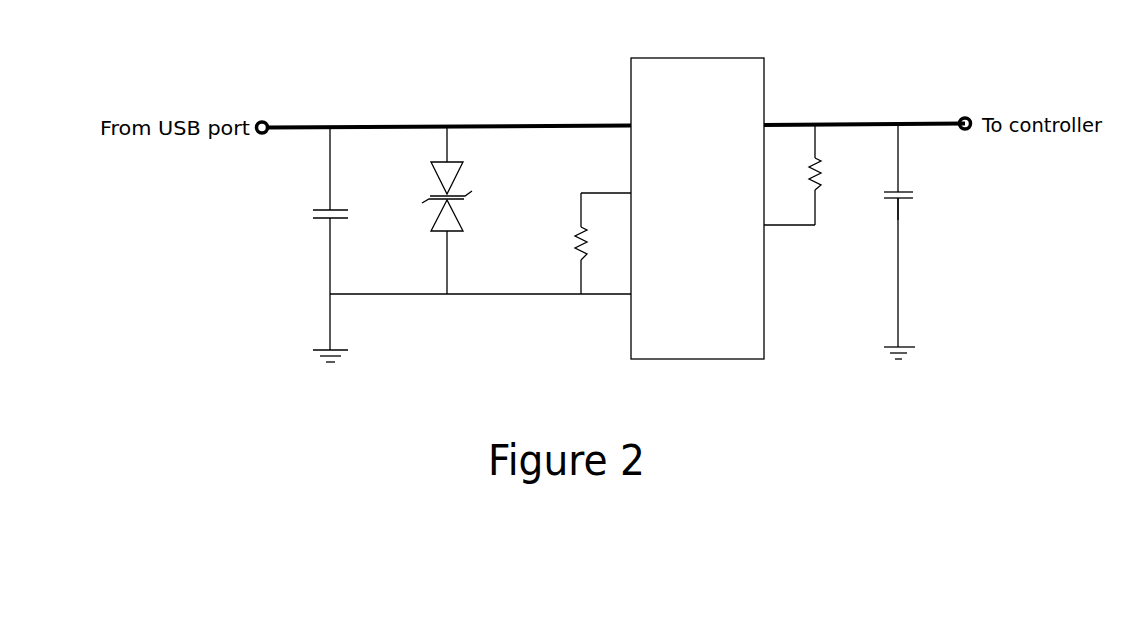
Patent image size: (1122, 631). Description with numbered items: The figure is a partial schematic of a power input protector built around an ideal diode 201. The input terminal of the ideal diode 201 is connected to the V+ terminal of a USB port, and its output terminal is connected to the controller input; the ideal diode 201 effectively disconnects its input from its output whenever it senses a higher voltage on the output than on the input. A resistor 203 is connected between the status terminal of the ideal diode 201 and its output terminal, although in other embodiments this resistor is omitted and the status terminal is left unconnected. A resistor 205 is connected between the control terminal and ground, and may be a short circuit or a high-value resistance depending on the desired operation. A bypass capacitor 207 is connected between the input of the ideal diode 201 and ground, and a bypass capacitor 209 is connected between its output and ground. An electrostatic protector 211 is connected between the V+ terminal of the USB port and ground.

The ideal diode 201 is at (662, 58).
The resistor 203 is at (821, 162).
The resistor 205 is at (580, 229).
The bypass capacitor 207 is at (336, 219).
The bypass capacitor 209 is at (905, 199).
The electrostatic (ESD) protector 211 is at (455, 232).